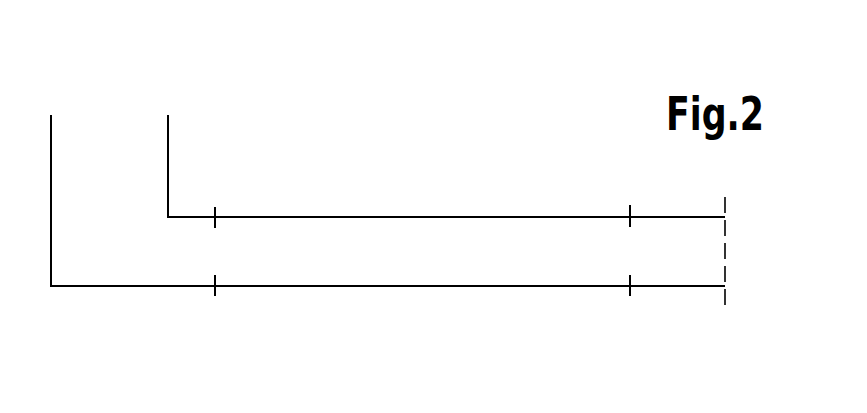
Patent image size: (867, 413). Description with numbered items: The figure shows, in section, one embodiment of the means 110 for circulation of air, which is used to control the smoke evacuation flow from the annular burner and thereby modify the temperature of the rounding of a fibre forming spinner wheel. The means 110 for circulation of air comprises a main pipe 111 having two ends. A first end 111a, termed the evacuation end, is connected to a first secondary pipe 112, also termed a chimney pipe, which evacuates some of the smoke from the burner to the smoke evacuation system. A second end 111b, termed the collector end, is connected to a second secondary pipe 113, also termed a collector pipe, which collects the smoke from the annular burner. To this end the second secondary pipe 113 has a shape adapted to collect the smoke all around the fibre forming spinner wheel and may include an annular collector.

The means for circulation of air 110 is at (395, 192).
The main pipe 111 is at (492, 216).
The first end 111a is at (224, 216).
The second end 111b is at (623, 216).
The first secondary pipe 112 is at (137, 288).
The second secondary pipe 113 is at (678, 288).